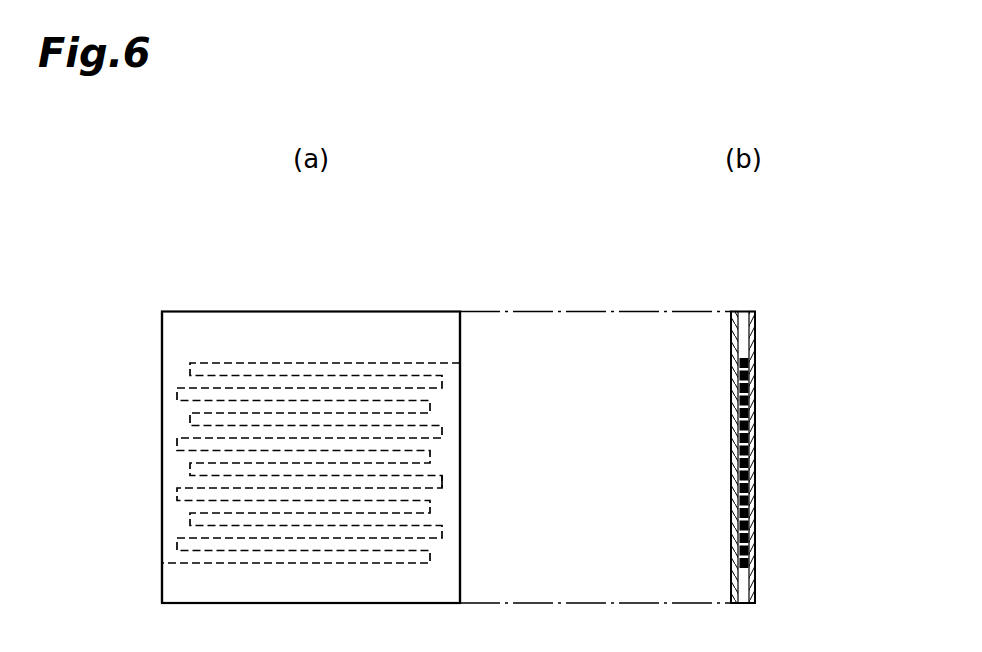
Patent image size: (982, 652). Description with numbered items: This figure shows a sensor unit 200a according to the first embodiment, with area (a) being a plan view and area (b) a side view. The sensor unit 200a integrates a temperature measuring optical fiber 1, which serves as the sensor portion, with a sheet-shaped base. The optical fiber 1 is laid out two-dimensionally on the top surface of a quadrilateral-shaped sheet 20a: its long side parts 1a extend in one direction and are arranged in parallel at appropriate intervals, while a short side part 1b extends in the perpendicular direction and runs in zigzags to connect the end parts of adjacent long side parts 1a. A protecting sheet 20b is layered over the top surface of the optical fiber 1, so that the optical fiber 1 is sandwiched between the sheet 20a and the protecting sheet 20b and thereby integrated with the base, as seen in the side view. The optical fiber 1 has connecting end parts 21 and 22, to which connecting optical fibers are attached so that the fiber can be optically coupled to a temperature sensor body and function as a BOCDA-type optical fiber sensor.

The sensor unit 200a is at (162, 348).
The optical fiber 1 is at (375, 361).
The long side part 1a is at (243, 368).
The short side part 1b is at (442, 478).
The connecting end part 21 is at (460, 362).
The connecting end part 22 is at (162, 563).
The sheet 20a is at (752, 436).
The protecting sheet 20b is at (735, 436).